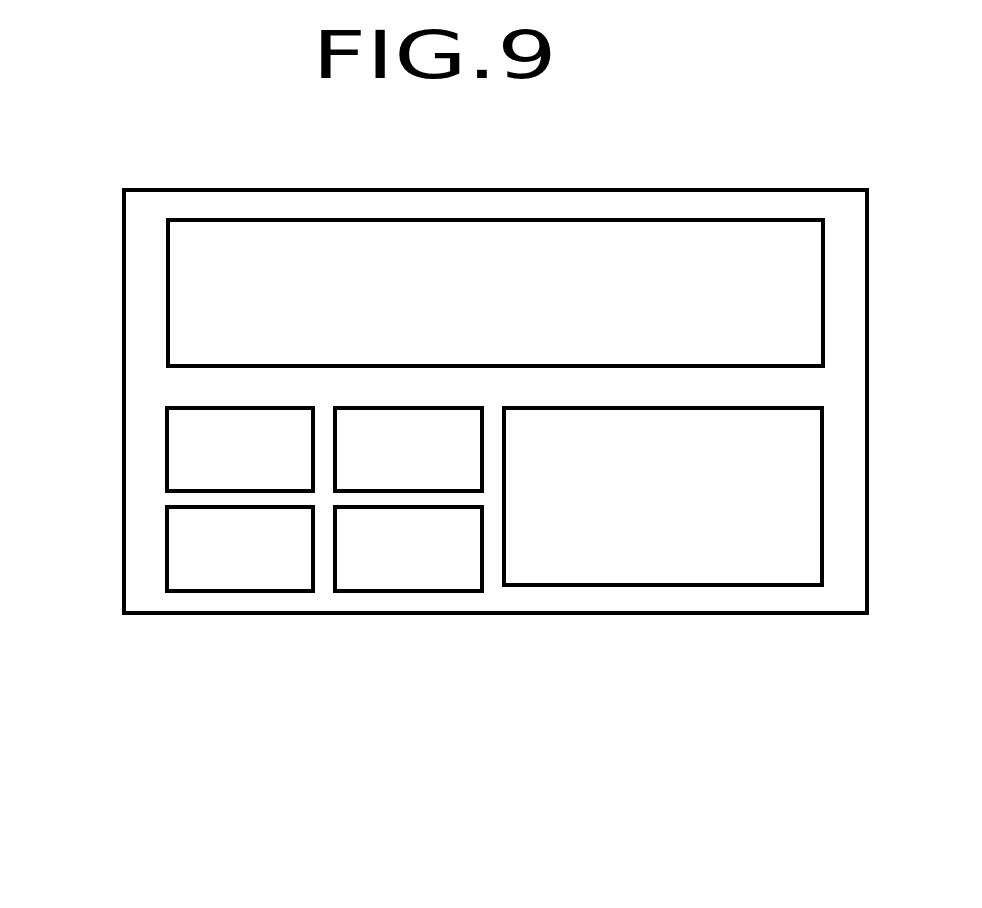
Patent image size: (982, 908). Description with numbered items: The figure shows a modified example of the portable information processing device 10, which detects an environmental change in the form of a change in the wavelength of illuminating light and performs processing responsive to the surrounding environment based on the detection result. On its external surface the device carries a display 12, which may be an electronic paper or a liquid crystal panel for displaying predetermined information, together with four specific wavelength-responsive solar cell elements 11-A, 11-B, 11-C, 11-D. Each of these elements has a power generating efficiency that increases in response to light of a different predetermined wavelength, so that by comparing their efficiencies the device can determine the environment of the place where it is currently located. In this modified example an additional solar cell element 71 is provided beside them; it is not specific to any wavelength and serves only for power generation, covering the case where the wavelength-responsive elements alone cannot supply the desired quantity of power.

The portable information processing device 10 is at (417, 778).
The display 12 is at (180, 289).
The specific wavelength-responsive solar cell element 11-A is at (182, 445).
The specific wavelength-responsive solar cell element 11-B is at (375, 472).
The specific wavelength-responsive solar cell element 11-C is at (234, 563).
The specific wavelength-responsive solar cell element 11-D is at (460, 565).
The solar cell element 71 is at (664, 567).